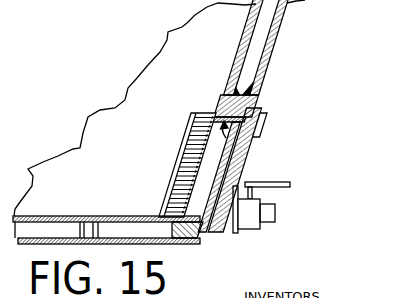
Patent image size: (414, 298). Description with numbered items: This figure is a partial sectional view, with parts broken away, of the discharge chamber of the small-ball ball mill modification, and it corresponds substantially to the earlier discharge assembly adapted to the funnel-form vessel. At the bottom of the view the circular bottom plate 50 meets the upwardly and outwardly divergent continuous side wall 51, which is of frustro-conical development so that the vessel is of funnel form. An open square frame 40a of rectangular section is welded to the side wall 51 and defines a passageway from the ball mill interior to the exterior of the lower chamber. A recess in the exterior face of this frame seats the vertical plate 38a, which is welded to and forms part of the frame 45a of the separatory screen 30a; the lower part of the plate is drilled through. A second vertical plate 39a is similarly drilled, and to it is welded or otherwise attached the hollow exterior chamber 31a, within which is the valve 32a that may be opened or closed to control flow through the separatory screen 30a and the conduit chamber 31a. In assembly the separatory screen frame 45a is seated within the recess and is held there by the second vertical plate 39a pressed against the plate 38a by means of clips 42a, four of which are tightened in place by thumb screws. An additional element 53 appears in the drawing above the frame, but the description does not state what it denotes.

The separatory screen 30a is at (170, 189).
The hollow exterior chamber 31a is at (258, 232).
The valve 32a is at (290, 187).
The vertical plate 38a is at (176, 166).
The second vertical plate 39a is at (257, 100).
The open square frame 40a is at (218, 103).
The clips 42a is at (263, 120).
The separatory screen frame 45a is at (250, 145).
The circular bottom plate 50 is at (53, 217).
The side wall 51 is at (222, 47).
The tube 53 is at (277, 37).